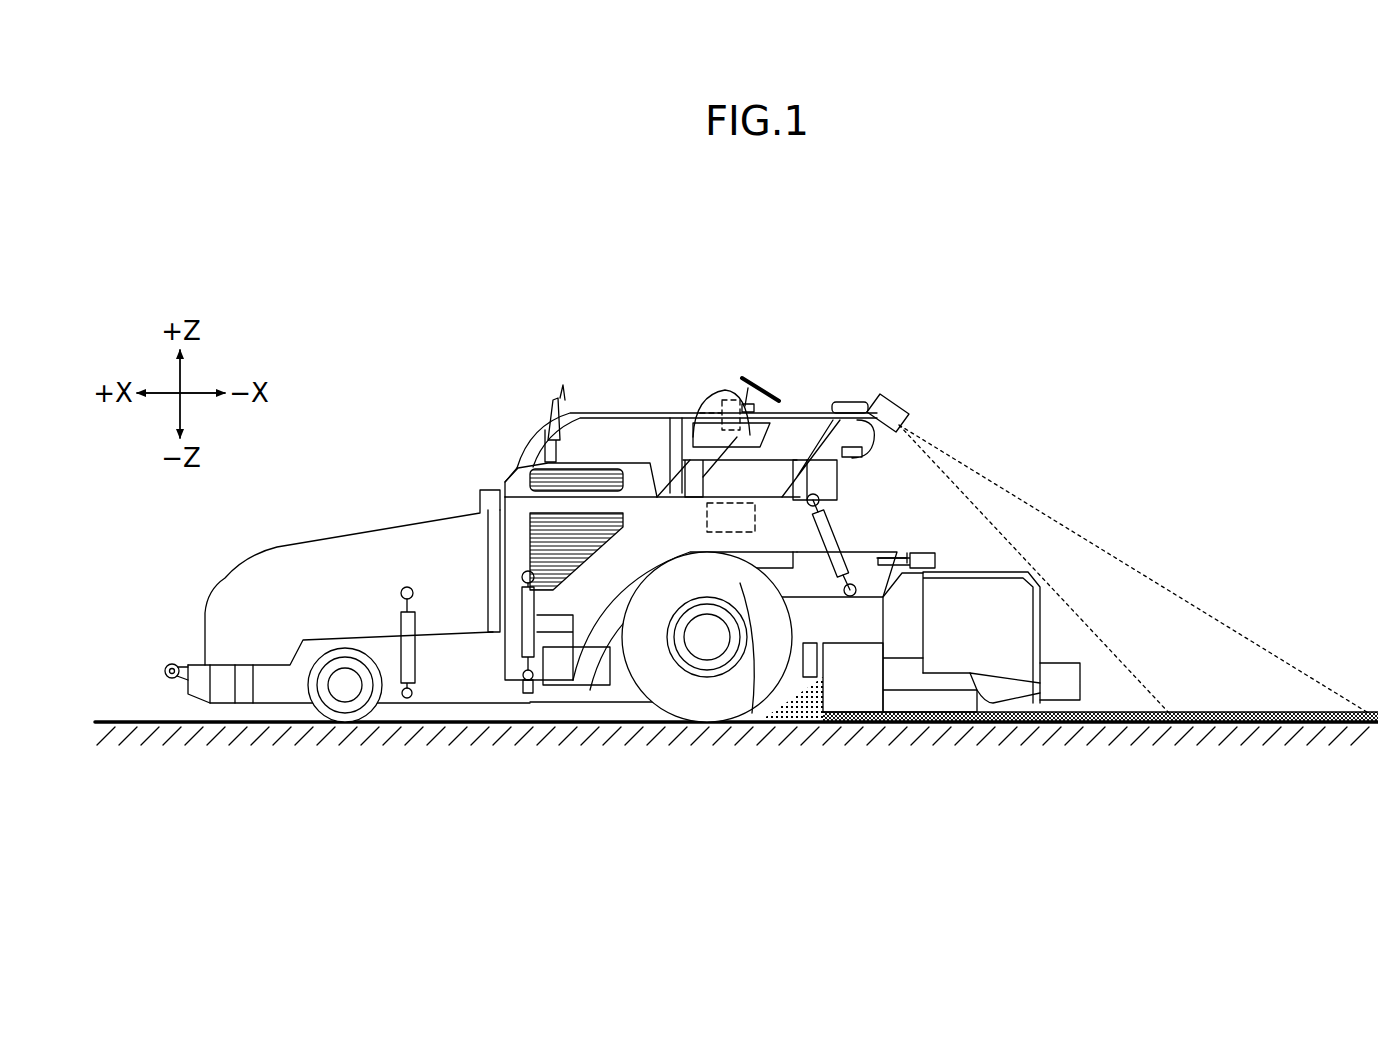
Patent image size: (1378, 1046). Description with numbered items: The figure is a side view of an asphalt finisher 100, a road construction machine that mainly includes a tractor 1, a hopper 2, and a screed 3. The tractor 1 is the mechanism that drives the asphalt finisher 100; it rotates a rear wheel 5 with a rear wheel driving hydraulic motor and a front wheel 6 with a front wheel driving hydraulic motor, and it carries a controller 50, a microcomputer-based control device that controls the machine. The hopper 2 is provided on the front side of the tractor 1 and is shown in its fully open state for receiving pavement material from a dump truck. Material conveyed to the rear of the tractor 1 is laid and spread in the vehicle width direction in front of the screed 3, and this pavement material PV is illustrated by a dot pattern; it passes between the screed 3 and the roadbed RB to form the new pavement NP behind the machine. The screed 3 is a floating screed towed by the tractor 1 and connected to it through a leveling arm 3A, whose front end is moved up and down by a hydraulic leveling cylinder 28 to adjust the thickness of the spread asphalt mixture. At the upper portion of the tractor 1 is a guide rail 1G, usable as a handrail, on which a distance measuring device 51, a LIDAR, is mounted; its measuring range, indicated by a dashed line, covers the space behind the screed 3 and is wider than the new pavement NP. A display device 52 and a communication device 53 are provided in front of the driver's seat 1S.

The asphalt finisher 100 is at (766, 357).
The tractor 1 is at (512, 468).
The guide rail 1G is at (623, 413).
The driver's seat 1S is at (857, 400).
The distance measuring device 51 is at (890, 405).
The display device 52 is at (732, 390).
The communication device 53 is at (706, 410).
The controller 50 is at (733, 495).
The hopper 2 is at (222, 576).
The leveling cylinder 28 is at (527, 633).
The front wheel 6 is at (345, 707).
The rear wheel 5 is at (694, 706).
The screed 3 is at (958, 700).
The leveling arm 3A is at (752, 713).
The roadbed RB is at (133, 721).
The pavement material PV is at (808, 702).
The new pavement NP is at (1072, 723).